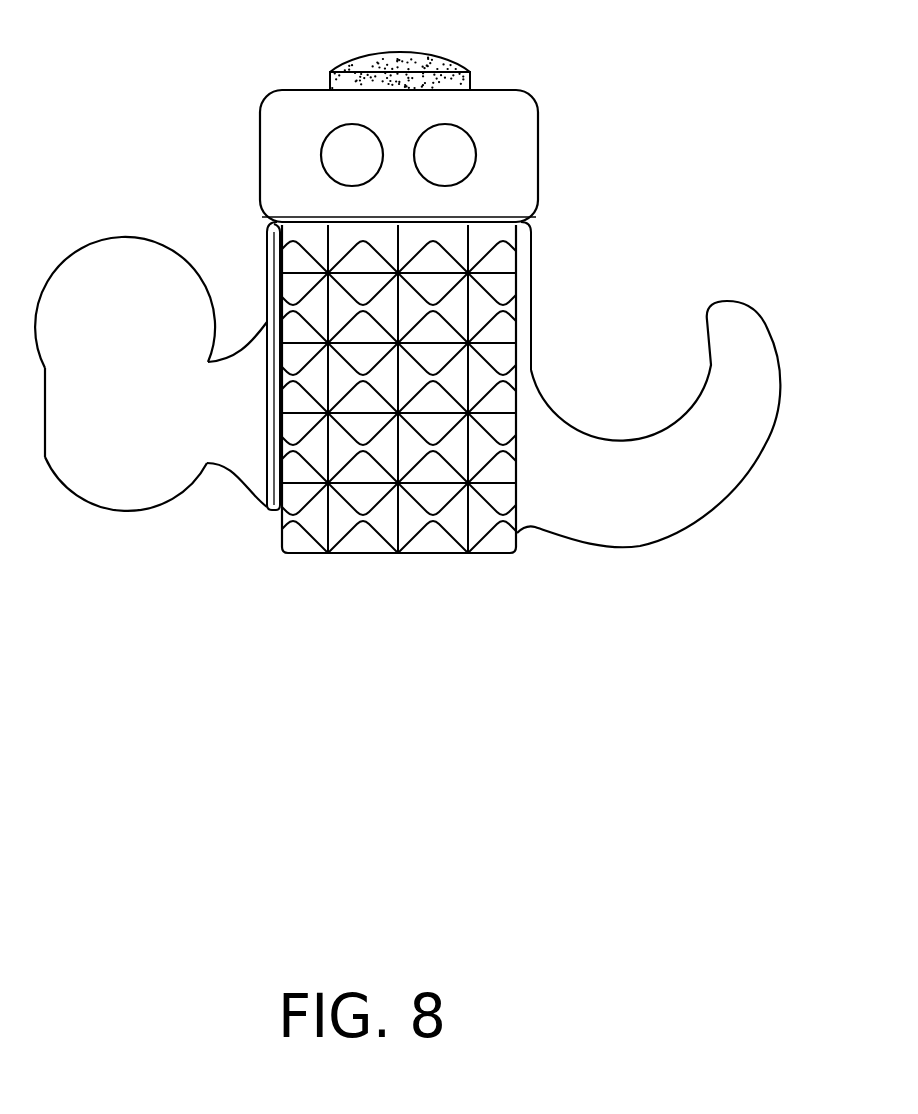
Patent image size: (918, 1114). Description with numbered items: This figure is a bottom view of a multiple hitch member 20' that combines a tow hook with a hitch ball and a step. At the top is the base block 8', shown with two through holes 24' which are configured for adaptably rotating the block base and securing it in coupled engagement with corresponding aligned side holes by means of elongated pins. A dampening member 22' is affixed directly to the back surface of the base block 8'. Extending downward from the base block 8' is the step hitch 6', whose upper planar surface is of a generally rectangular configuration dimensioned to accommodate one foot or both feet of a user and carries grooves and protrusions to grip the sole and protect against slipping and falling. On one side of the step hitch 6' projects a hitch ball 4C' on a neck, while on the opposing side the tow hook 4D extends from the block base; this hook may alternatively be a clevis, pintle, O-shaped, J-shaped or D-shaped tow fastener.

The multiple hitch member 20' is at (407, 297).
The base block 8' is at (398, 255).
The dampening member 22' is at (413, 52).
The through holes 24' is at (458, 124).
The step hitch 6' is at (398, 410).
The hitch ball 4C' is at (151, 394).
The tow hook 4D is at (673, 513).